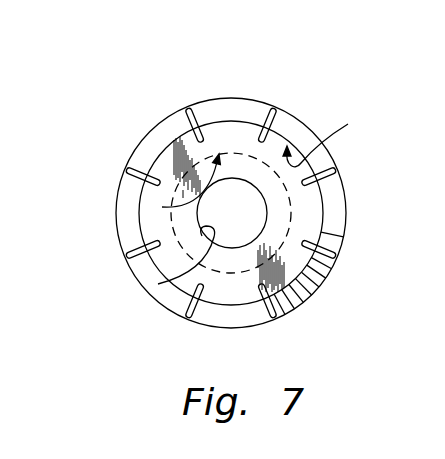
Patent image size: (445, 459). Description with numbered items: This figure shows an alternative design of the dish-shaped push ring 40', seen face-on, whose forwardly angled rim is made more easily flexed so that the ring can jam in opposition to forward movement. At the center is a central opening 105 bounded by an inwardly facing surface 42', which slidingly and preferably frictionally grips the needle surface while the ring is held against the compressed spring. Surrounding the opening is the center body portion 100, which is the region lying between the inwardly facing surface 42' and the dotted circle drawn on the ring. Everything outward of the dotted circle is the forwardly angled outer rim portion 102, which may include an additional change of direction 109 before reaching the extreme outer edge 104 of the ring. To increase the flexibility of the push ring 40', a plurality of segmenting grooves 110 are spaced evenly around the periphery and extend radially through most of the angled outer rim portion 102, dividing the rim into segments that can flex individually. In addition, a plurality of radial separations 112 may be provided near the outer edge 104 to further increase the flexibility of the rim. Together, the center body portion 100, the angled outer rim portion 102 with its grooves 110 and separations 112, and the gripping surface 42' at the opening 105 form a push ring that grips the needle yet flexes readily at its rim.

The push ring 40' is at (193, 179).
The extreme outer edge 104 is at (236, 99).
The center body portion 100 is at (298, 204).
The central opening 105 is at (232, 213).
The segmenting grooves 110 is at (231, 206).
The radial separations 112 is at (331, 282).
The forwardly angled outer rim portion 102 is at (162, 207).
The inwardly facing surface 42' is at (183, 264).
The additional change of direction 109 is at (336, 138).